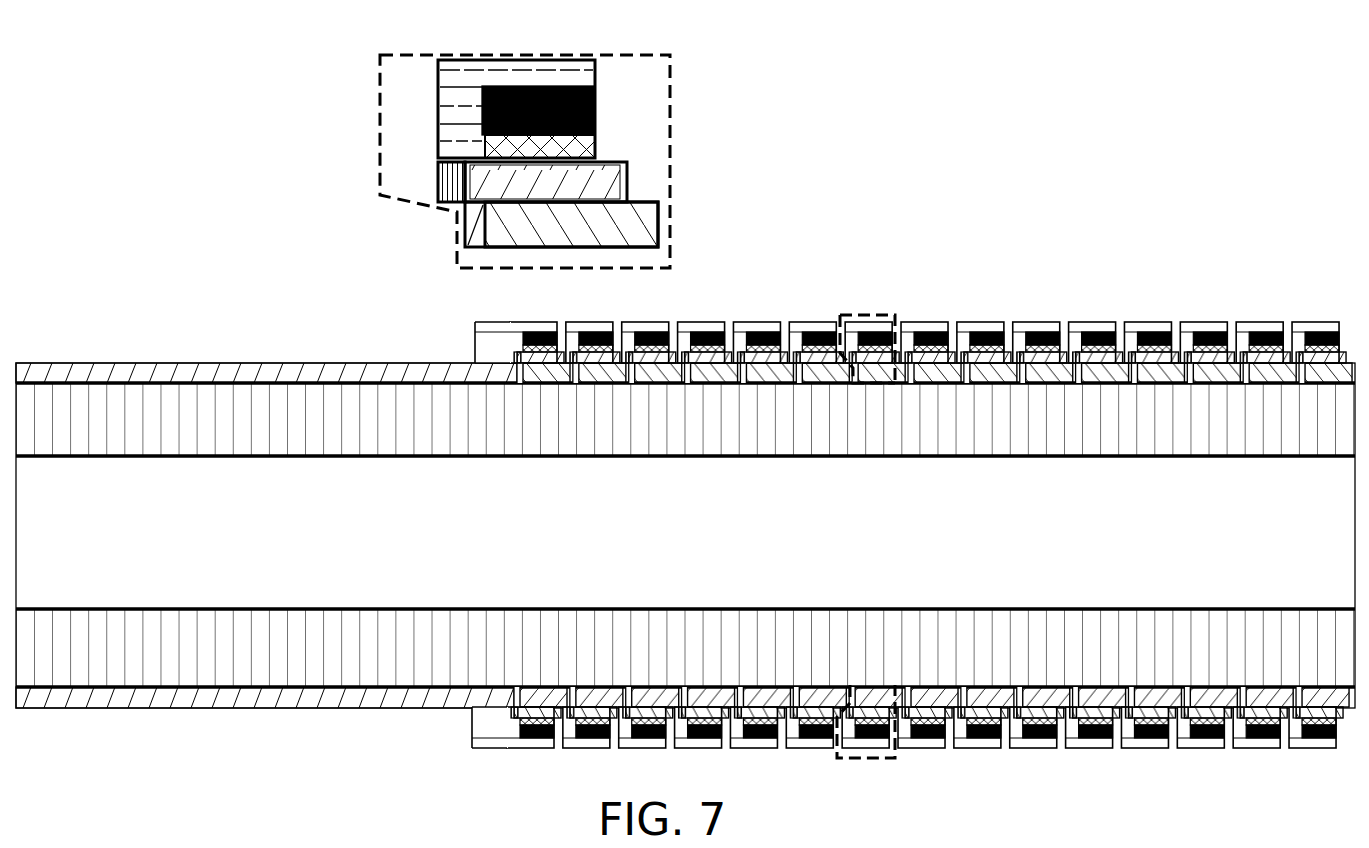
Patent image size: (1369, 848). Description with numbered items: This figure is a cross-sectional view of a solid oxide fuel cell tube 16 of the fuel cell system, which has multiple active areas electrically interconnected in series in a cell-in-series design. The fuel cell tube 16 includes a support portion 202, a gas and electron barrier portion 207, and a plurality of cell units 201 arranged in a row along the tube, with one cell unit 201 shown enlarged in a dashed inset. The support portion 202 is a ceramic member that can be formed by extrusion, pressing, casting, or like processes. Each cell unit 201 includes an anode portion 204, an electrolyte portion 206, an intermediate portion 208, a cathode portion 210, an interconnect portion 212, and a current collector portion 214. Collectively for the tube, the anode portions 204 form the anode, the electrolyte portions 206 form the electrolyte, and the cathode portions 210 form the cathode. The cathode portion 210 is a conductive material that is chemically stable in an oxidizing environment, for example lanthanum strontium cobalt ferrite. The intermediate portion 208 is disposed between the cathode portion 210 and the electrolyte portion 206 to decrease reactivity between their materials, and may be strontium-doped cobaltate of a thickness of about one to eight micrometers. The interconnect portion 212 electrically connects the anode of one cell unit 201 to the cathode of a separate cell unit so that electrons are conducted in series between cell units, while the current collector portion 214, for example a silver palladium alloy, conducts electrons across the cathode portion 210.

The fuel cell tube 16 is at (82, 327).
The cell unit 201 is at (882, 306).
The support portion 202 is at (298, 395).
The anode portion 204 is at (638, 230).
The electrolyte portion 206 is at (615, 182).
The gas and electron barrier portion 207 is at (427, 374).
The intermediate portion 208 is at (582, 148).
The cathode portion 210 is at (595, 97).
The interconnect portion 212 is at (440, 172).
The current collector portion 214 is at (453, 97).